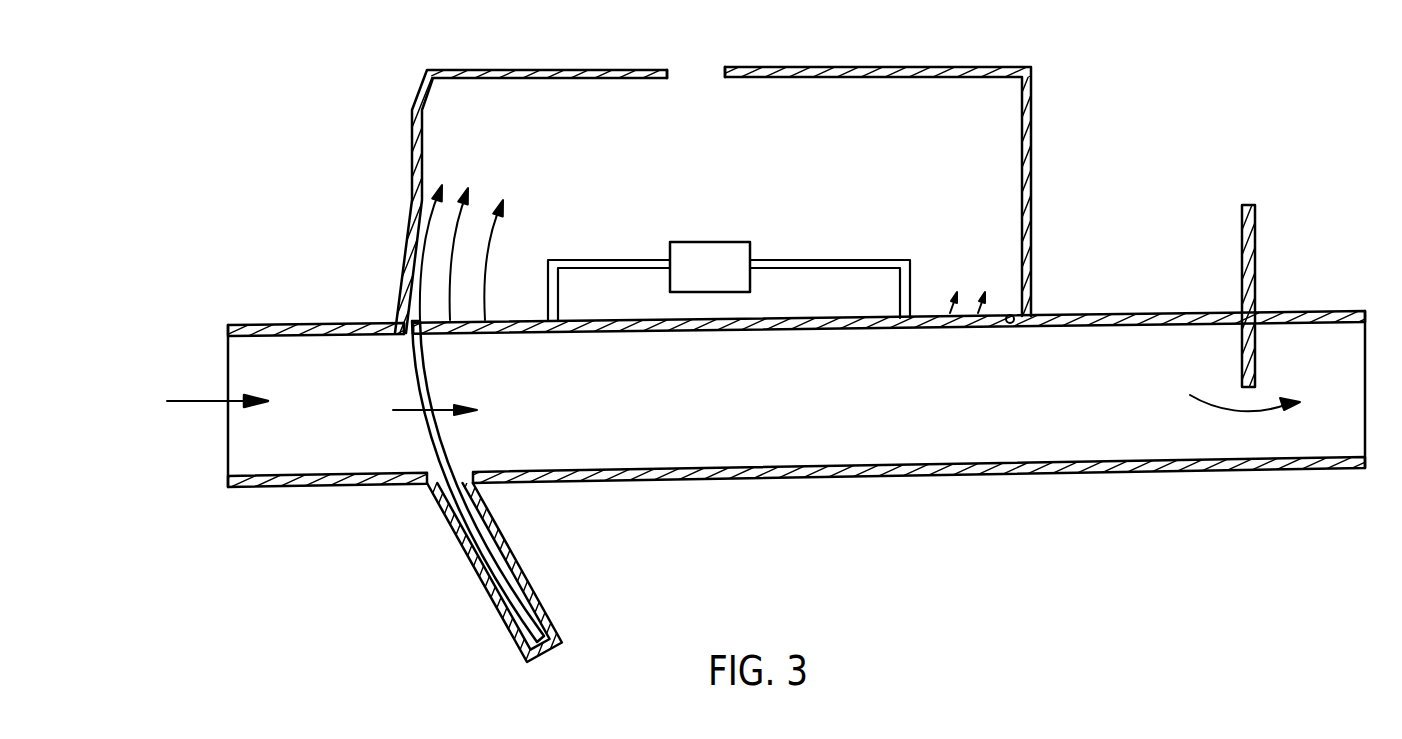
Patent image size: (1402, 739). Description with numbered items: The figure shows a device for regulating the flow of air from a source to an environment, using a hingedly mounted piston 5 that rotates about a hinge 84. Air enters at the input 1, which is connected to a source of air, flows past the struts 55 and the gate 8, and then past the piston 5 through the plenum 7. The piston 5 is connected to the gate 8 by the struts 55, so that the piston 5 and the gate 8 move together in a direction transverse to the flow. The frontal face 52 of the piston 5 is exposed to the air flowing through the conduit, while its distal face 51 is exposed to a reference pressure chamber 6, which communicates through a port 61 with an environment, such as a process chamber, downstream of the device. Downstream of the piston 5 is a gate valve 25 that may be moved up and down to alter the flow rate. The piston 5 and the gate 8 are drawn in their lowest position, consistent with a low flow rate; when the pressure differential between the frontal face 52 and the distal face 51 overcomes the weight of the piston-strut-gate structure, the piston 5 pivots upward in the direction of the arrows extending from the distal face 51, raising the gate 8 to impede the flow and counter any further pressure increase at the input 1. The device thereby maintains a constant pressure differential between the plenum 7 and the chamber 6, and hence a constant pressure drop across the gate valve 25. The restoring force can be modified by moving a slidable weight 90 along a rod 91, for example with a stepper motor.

The input 1 is at (232, 445).
The piston 5 is at (664, 326).
The reference pressure chamber 6 is at (788, 232).
The plenum 7 is at (773, 407).
The gate 8 is at (448, 537).
The gate valve 25 is at (1257, 257).
The distal face 51 is at (527, 320).
The frontal face 52 is at (508, 334).
The struts 55 is at (413, 367).
The port 61 is at (706, 74).
The hinge 84 is at (1017, 324).
The slidable weight 90 is at (694, 289).
The rod 91 is at (628, 260).